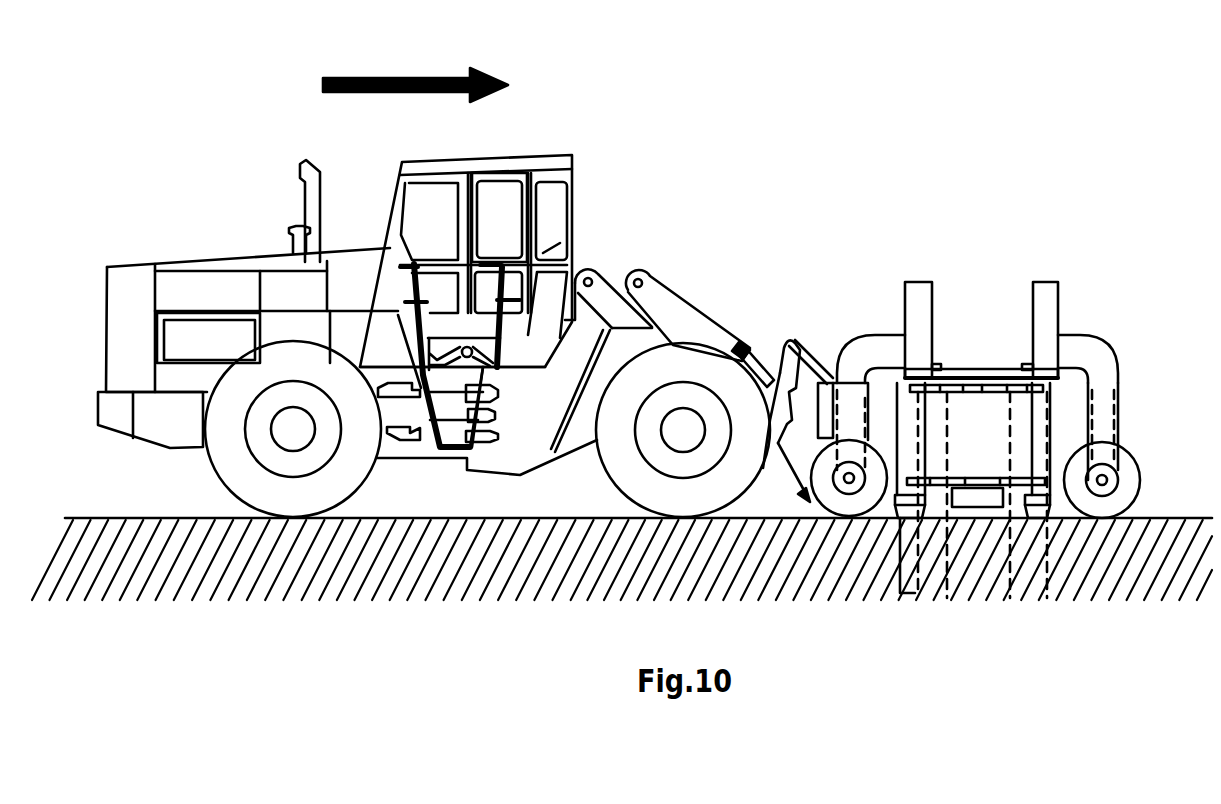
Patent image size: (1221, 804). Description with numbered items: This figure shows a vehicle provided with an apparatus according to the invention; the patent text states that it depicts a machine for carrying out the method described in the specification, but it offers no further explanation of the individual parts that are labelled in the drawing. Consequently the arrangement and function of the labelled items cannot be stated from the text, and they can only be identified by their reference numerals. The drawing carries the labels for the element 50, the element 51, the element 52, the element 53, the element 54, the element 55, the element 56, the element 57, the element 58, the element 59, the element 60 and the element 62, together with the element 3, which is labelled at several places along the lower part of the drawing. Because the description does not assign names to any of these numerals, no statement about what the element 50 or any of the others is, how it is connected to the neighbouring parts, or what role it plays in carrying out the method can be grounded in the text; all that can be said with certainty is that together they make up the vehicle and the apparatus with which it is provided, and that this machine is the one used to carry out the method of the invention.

The wheel loader vehicle 50 is at (628, 182).
The direction of travel arrow 51 is at (425, 75).
The lift arm 52 is at (687, 310).
The operator cab 53 is at (495, 213).
The hydraulic tilt cylinder 54 is at (752, 357).
The mounting frame 55 is at (783, 370).
The lower link 56 is at (788, 475).
The upper link 57 is at (811, 365).
The support arm 58 is at (1110, 400).
The gauge wheel 59 is at (838, 505).
The gauge wheel 60 is at (1130, 488).
The guide rails 62 is at (994, 390).
The posts 3 is at (905, 575).